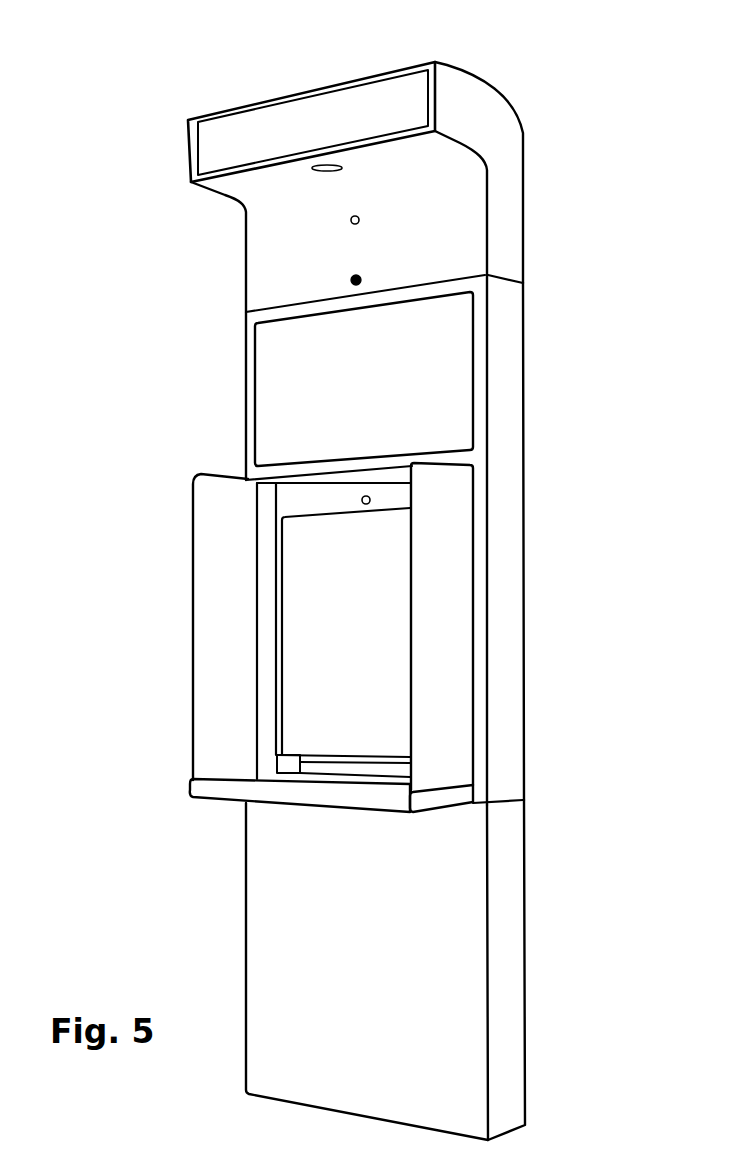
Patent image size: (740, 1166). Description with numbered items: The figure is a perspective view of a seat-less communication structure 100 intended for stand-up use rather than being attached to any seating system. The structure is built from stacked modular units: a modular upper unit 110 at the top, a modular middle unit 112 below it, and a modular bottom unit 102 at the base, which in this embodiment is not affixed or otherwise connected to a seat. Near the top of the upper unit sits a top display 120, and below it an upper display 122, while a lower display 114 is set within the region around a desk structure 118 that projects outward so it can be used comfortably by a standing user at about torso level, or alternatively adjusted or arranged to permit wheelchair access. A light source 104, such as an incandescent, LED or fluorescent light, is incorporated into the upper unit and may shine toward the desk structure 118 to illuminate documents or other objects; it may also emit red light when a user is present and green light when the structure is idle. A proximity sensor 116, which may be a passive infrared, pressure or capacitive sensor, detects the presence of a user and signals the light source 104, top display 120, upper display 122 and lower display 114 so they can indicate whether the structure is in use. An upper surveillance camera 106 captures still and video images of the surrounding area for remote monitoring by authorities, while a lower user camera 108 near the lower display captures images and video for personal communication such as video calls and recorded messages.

The communication structure 100 is at (112, 89).
The modular bottom unit 102 is at (525, 940).
The light source 104 is at (313, 170).
The upper surveillance camera 106 is at (350, 223).
The lower user camera 108 is at (362, 500).
The modular upper unit 110 is at (525, 132).
The modular middle unit 112 is at (523, 598).
The lower display 114 is at (338, 619).
The proximity sensor 116 is at (362, 278).
The desk structure 118 is at (160, 776).
The top display 120 is at (243, 133).
The upper display 122 is at (400, 398).